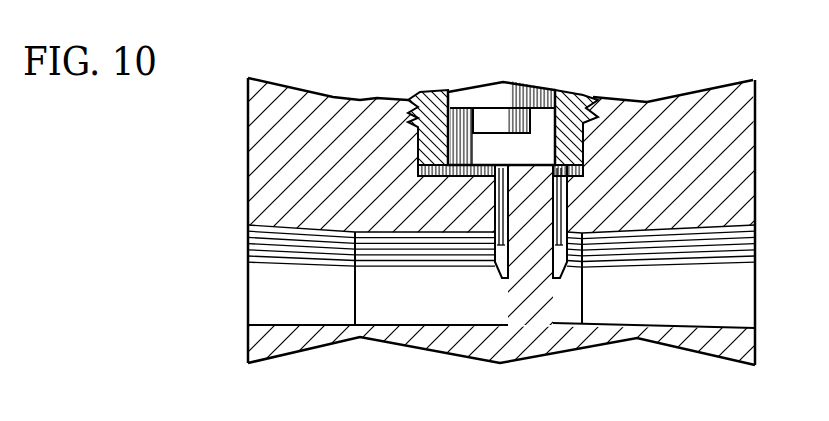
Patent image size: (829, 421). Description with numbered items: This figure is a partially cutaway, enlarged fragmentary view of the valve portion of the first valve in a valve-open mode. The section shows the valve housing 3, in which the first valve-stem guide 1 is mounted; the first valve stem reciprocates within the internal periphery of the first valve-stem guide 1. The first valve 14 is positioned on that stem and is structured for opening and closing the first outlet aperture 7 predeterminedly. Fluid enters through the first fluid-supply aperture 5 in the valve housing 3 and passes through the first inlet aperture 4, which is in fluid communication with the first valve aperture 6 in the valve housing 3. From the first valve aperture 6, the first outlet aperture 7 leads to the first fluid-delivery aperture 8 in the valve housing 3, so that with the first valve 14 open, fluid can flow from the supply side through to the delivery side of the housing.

The valve housing 3 is at (355, 142).
The first valve-stem guide 1 is at (430, 113).
The first outlet aperture 7 is at (480, 145).
The first valve 14 is at (502, 128).
The first valve aperture 6 is at (543, 168).
The first inlet aperture 4 is at (568, 172).
The first fluid-delivery aperture 8 is at (372, 290).
The first fluid-supply aperture 5 is at (623, 293).